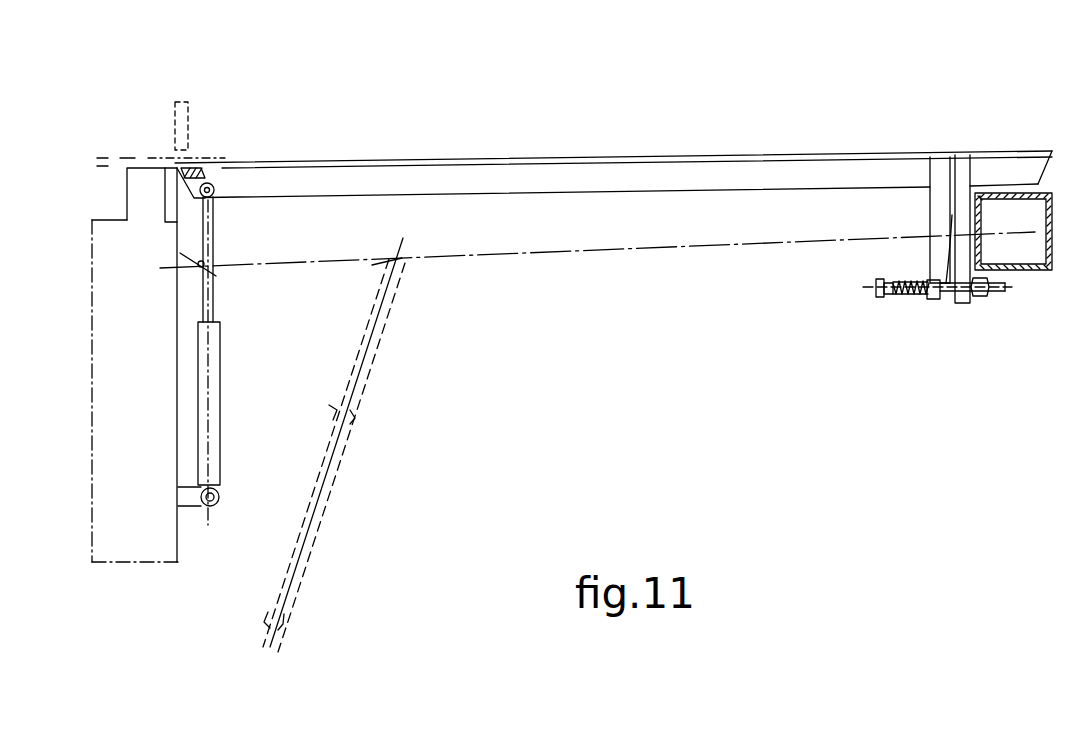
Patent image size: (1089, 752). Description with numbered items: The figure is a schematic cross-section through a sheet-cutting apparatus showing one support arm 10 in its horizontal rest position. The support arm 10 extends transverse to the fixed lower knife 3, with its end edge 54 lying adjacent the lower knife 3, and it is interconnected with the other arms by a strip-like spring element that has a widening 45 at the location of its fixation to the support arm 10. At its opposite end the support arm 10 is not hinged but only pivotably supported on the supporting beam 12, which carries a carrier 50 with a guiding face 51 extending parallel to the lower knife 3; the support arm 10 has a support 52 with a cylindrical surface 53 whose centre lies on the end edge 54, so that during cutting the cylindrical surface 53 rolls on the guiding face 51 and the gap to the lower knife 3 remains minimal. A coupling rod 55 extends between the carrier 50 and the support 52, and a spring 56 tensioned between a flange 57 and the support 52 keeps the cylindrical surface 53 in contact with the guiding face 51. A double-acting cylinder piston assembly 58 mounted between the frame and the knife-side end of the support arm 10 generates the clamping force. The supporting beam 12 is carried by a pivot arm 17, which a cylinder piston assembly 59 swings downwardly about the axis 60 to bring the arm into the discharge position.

The lower knife 3 is at (168, 198).
The support arm 10 is at (668, 167).
The supporting beam 12 is at (1050, 230).
The pivot arm 17 is at (668, 250).
The widening 45 is at (212, 172).
The carrier 50 is at (960, 160).
The guiding face 51 is at (966, 300).
The support 52 is at (940, 182).
The cylindrical surface 53 is at (930, 300).
The end edge 54 is at (190, 166).
The coupling rod 55 is at (952, 300).
The spring 56 is at (912, 282).
The flange 57 is at (882, 282).
The cylinder piston assembly 58 is at (215, 392).
The cylinder piston assembly 59 is at (318, 533).
The axis 60 is at (204, 262).